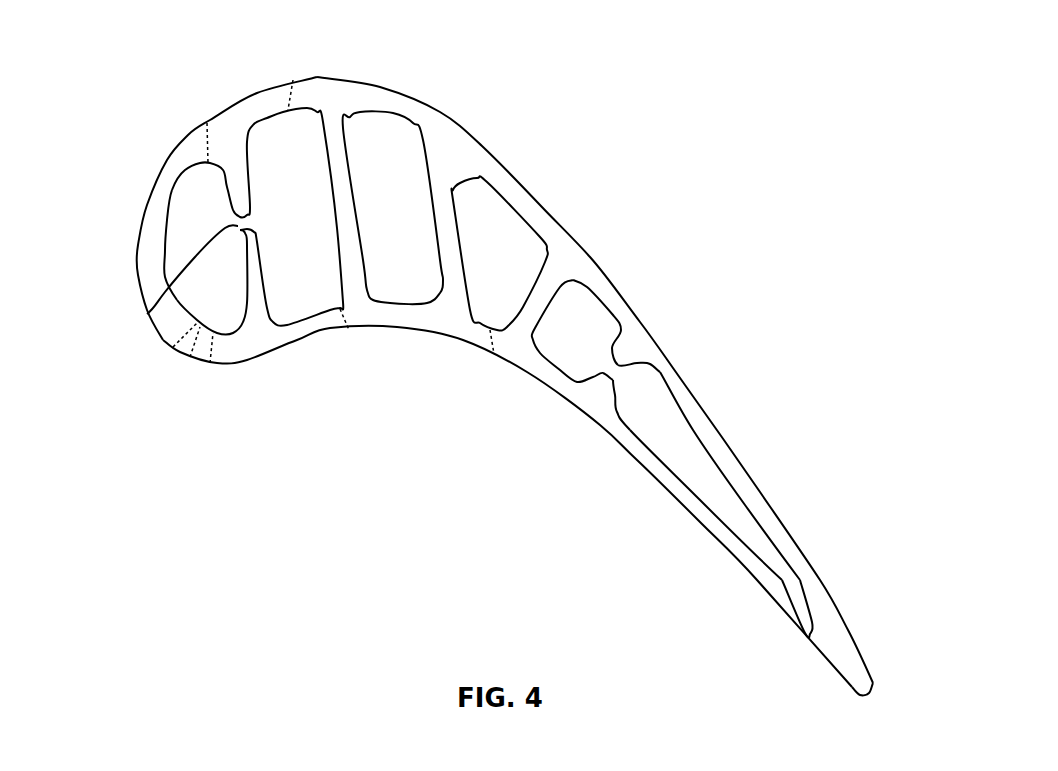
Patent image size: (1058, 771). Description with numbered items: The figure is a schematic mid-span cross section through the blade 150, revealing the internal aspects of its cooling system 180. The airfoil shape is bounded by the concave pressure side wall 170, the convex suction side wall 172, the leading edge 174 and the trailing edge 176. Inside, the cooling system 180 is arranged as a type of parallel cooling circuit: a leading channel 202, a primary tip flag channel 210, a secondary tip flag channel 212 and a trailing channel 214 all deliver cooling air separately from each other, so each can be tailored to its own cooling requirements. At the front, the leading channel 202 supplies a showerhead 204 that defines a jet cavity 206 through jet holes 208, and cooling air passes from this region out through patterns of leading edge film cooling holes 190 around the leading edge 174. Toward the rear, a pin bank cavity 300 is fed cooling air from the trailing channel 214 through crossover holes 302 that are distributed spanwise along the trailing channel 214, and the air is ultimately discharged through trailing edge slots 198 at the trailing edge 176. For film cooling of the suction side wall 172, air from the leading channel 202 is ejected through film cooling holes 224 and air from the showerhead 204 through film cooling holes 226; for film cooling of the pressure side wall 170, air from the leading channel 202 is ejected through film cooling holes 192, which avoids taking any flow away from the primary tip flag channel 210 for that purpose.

The blade 150 is at (592, 56).
The pressure side wall 170 is at (643, 470).
The suction side wall 172 is at (600, 267).
The leading edge 174 is at (137, 267).
The trailing edge 176 is at (873, 685).
The cooling system 180 is at (397, 112).
The leading edge film cooling holes 190 is at (192, 349).
The pressure side wall film cooling holes 192 is at (349, 330).
The trailing edge slots 198 is at (840, 663).
The leading channel 202 is at (267, 135).
The showerhead 204 is at (180, 187).
The jet cavity 206 is at (183, 240).
The jet holes 208 is at (147, 314).
The primary tip flag channel 210 is at (397, 180).
The secondary tip flag channel 212 is at (503, 230).
The trailing channel 214 is at (583, 327).
The film cooling holes 224 is at (293, 80).
The film cooling holes 226 is at (210, 120).
The pin bank cavity 300 is at (727, 505).
The crossover holes 302 is at (620, 375).